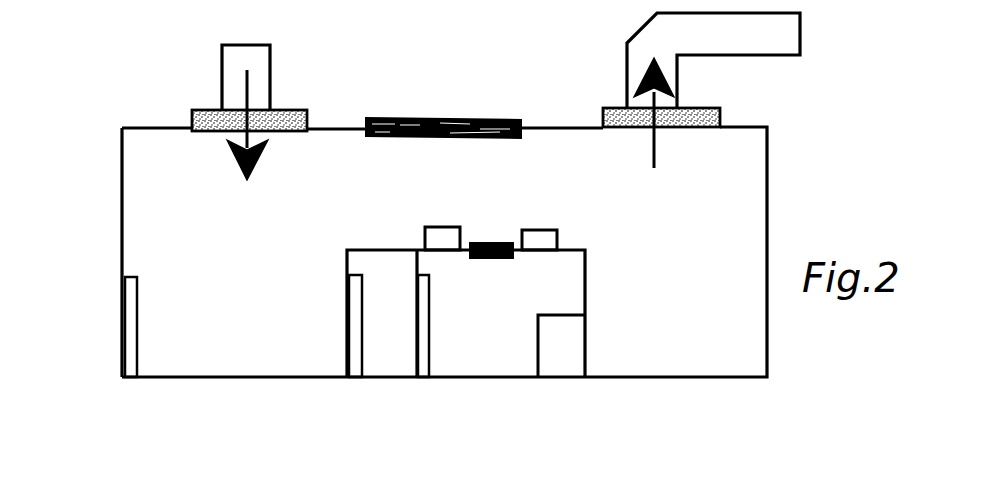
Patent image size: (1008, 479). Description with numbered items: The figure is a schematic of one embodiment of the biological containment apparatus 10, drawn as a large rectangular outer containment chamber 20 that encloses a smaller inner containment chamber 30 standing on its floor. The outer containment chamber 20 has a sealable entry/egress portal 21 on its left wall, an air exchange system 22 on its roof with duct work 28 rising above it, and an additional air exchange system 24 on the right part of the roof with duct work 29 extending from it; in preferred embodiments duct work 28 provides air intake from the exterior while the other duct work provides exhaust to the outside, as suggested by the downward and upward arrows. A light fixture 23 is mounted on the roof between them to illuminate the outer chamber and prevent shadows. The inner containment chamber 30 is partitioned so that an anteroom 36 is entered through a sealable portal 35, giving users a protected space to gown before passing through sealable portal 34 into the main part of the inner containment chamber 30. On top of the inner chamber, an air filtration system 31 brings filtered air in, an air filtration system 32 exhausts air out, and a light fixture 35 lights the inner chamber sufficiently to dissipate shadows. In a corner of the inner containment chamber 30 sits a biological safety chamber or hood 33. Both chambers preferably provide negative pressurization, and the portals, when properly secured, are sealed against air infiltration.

The biological containment apparatus 10 is at (393, 249).
The outer containment chamber 20 is at (113, 239).
The sealable entry/egress portal 21 is at (112, 343).
The air exchange system 22 is at (313, 106).
The light fixture 23 is at (443, 113).
The additional air exchange system 24 is at (602, 92).
The duct work 28 is at (251, 26).
The duct work 29 is at (740, 60).
The inner containment chamber 30 is at (486, 313).
The air filtration system 31 is at (450, 223).
The air filtration system 32 is at (558, 230).
The biological safety chamber/hood 33 is at (529, 346).
The sealable portal 34 is at (442, 326).
The light fixture / sealable portal 35 is at (410, 302).
The anteroom 36 is at (390, 300).